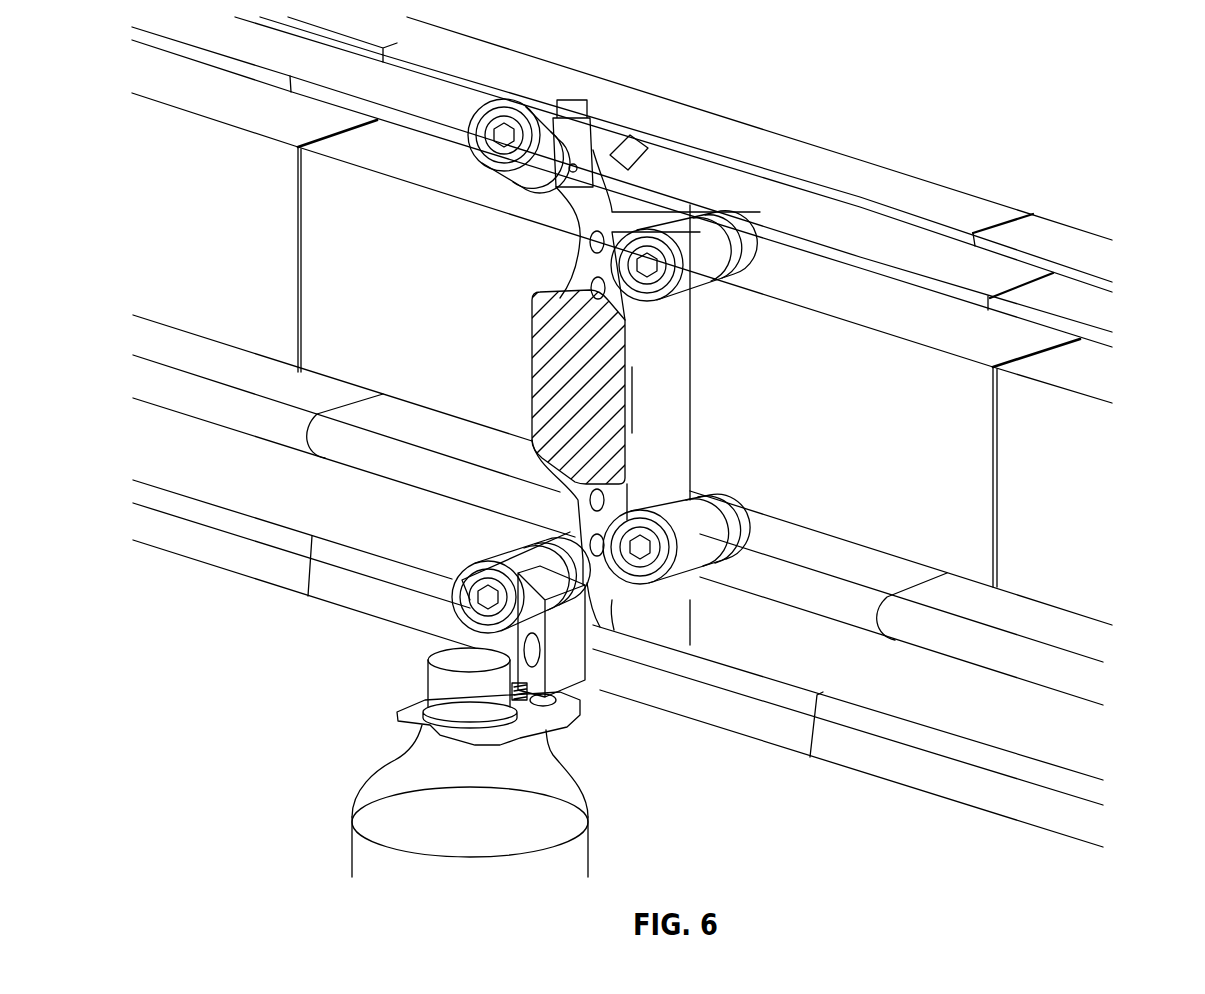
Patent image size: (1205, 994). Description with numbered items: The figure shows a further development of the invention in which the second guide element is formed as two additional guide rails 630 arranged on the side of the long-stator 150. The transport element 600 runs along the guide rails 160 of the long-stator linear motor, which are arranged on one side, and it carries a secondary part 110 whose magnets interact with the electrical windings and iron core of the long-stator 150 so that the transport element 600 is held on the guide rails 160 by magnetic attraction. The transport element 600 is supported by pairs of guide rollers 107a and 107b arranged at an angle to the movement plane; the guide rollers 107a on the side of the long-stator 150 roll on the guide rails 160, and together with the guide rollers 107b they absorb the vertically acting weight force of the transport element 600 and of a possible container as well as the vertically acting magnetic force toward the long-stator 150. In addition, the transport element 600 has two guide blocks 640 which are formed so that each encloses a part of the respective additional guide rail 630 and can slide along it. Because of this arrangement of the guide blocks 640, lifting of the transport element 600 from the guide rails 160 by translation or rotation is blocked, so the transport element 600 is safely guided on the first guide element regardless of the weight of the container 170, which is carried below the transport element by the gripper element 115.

The long-stator 150 is at (955, 470).
The additional guide rail 630 is at (1103, 277).
The guide rail 160 is at (1113, 338).
The transport element 600 is at (702, 393).
The secondary part 110 is at (550, 377).
The guide roller 107a is at (553, 100).
The guide roller 107b is at (482, 162).
The guide block 640 is at (623, 133).
The gripper element 115 is at (548, 743).
The container 170 is at (405, 763).